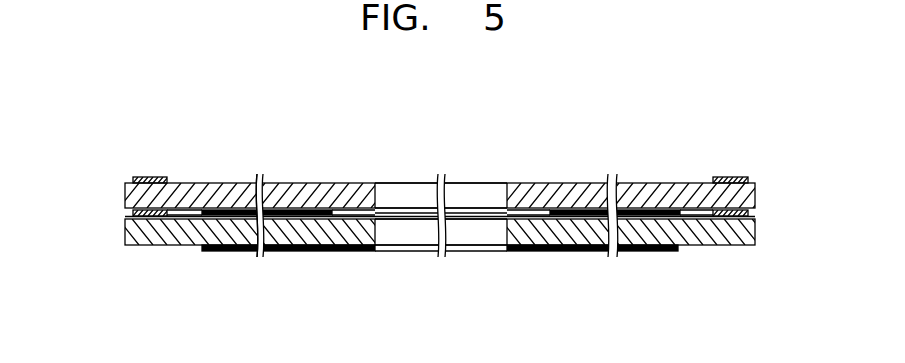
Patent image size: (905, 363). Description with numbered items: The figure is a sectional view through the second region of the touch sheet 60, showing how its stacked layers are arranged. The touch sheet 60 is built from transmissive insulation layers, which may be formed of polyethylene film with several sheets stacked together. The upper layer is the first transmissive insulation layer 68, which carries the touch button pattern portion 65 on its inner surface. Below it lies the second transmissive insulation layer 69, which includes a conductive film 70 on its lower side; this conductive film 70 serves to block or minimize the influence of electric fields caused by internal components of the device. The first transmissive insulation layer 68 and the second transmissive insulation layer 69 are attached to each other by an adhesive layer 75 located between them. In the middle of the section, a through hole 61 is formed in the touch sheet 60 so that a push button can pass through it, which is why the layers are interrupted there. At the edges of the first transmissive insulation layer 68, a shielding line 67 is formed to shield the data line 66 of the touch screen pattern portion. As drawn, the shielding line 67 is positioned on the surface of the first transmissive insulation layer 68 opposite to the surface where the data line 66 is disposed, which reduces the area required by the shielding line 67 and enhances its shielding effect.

The touch sheet 60 is at (114, 128).
The through hole 61 is at (378, 197).
The touch button pattern portion 65 is at (232, 208).
The data line 66 is at (133, 212).
The shielding line 67 is at (150, 177).
The first transmissive insulation layer 68 is at (192, 196).
The second transmissive insulation layer 69 is at (188, 230).
The conductive film 70 is at (229, 252).
The adhesive layer 75 is at (146, 218).